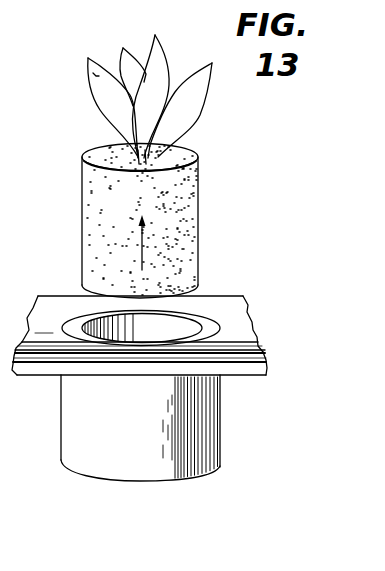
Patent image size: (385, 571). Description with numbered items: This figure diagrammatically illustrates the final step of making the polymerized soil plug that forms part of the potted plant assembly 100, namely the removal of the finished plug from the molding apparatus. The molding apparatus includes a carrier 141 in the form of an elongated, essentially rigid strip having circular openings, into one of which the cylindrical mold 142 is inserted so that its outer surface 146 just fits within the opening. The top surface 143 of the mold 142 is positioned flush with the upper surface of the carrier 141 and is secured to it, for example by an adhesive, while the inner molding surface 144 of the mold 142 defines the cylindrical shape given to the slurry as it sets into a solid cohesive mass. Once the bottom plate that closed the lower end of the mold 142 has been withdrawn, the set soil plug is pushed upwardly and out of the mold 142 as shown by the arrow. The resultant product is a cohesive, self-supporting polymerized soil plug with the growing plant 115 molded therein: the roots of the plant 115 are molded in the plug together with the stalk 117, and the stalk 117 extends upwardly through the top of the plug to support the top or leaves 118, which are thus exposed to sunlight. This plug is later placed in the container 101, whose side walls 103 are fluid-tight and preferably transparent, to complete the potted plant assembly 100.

The potted plant assembly 100 is at (198, 139).
The container 101 is at (196, 155).
The side wall 103 is at (199, 203).
The plant 115 is at (123, 118).
The stalk 117 is at (137, 156).
The leaves 118 is at (121, 67).
The carrier 141 is at (232, 315).
The mold 142 is at (197, 410).
The top surface 143 is at (208, 330).
The inner molding surface 144 is at (175, 330).
The outer surface 146 is at (148, 468).